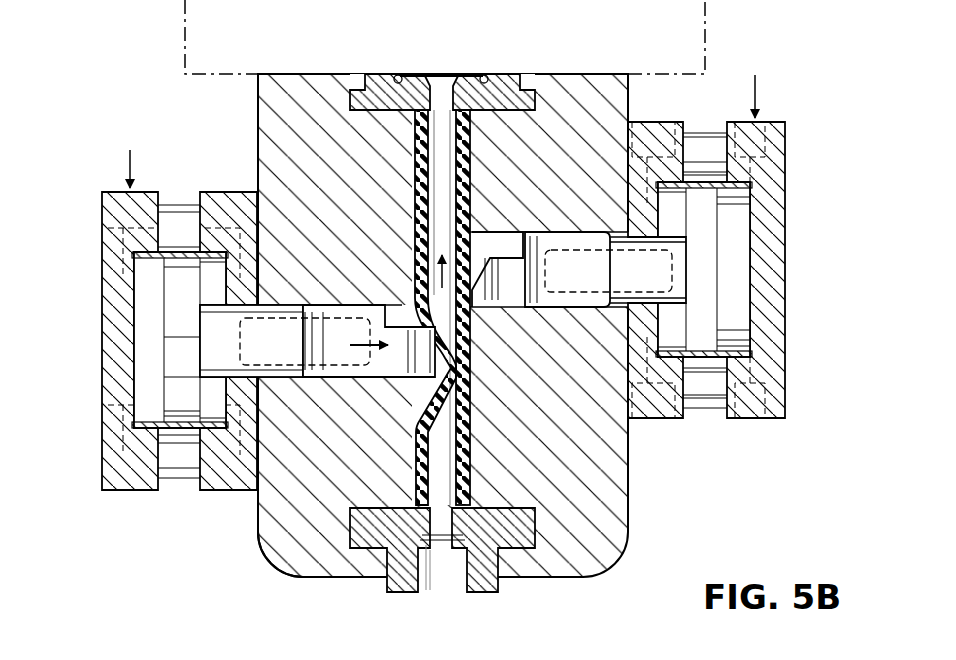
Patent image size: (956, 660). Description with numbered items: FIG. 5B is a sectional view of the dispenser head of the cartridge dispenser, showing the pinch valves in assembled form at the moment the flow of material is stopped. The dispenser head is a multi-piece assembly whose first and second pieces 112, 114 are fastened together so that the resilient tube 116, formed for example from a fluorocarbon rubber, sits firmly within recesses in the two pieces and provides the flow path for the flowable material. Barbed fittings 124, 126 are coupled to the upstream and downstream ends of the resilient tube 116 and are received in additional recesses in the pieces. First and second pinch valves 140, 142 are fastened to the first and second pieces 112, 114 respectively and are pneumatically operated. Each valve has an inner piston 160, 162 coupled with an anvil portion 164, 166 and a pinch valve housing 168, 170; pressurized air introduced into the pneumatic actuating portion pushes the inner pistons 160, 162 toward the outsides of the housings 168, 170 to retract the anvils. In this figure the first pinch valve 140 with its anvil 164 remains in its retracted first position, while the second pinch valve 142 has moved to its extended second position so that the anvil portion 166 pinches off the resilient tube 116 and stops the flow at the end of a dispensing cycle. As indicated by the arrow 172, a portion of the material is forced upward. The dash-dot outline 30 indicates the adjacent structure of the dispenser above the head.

The fluid handling module 30 is at (707, 42).
The first piece 112 is at (632, 503).
The second piece 114 is at (258, 532).
The resilient tube 116 is at (474, 232).
The barbed fitting 124 is at (378, 76).
The barbed fitting 126 is at (478, 592).
The first pinch valve 140 is at (741, 276).
The second pinch valve 142 is at (148, 342).
The inner piston 160 is at (740, 245).
The inner piston 162 is at (168, 310).
The anvil portion 164 is at (557, 242).
The anvil portion 166 is at (353, 312).
The pinch valve housing 168 is at (787, 373).
The pinch valve housing 170 is at (102, 372).
The arrow 172 is at (414, 255).